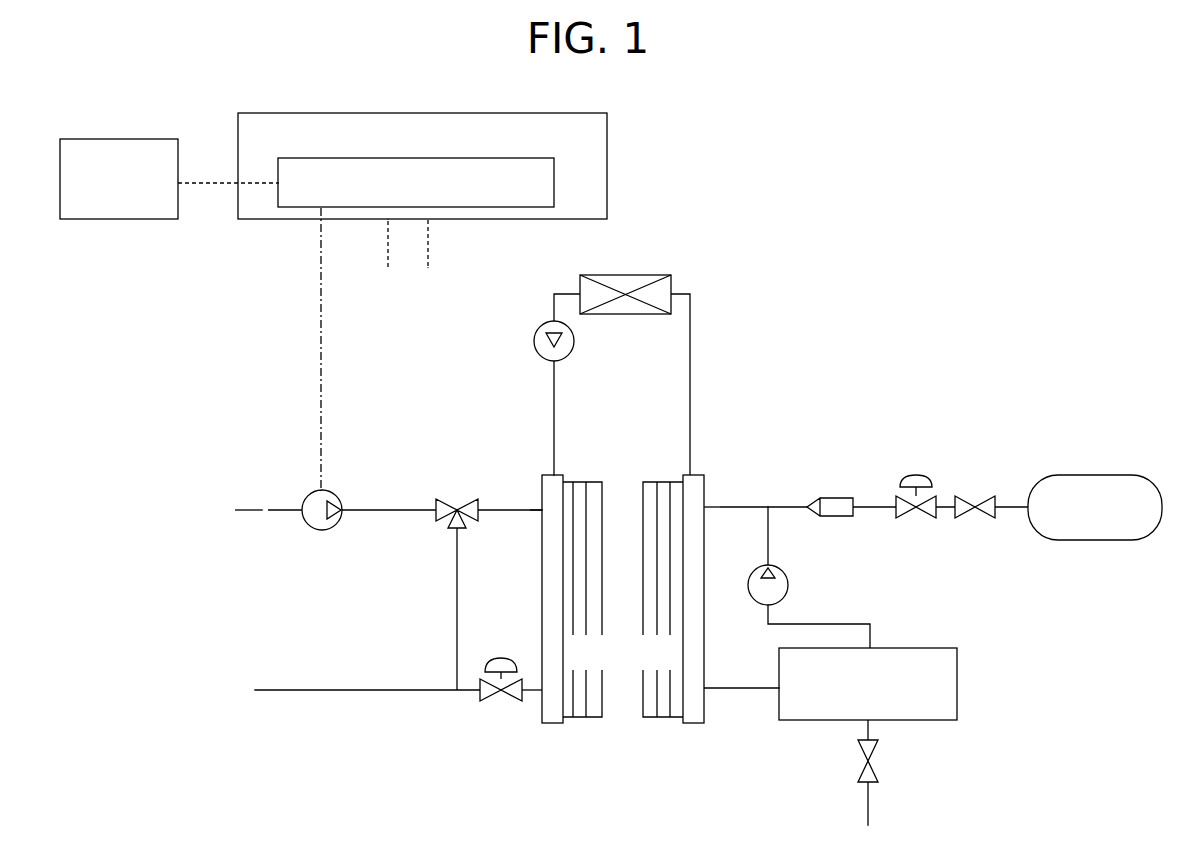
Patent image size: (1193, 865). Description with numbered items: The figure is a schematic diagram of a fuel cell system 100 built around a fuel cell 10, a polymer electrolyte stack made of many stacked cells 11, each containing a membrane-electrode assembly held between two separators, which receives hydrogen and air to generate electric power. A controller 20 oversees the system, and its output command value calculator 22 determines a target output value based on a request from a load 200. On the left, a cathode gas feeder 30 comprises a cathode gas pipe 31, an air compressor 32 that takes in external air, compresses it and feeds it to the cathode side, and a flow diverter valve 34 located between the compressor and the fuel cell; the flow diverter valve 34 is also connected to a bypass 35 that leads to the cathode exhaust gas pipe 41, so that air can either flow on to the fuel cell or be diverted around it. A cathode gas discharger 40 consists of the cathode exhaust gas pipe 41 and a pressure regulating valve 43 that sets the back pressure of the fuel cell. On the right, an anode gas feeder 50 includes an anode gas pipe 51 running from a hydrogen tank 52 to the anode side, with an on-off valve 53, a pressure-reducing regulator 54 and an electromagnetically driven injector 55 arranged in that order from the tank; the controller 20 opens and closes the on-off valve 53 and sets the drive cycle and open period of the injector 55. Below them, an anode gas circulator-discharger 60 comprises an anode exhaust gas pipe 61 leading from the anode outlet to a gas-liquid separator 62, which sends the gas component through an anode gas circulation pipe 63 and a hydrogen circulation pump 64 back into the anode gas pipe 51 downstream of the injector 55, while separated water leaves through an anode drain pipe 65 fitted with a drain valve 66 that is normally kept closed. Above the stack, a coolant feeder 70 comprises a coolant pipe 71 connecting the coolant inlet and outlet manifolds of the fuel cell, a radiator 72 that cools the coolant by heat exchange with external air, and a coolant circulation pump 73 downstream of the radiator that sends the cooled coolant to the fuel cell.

The fuel cell system 100 is at (997, 157).
The load 200 is at (147, 137).
The controller 20 is at (443, 166).
The output command value calculator 22 is at (554, 187).
The fuel cell 10 is at (609, 625).
The cells 11 is at (582, 726).
The cathode gas feeder 30 is at (313, 552).
The cathode gas pipe 31 is at (400, 505).
The air compressor 32 is at (330, 491).
The flow diverter valve 34 is at (448, 500).
The bypass 35 is at (457, 612).
The cathode gas discharger 40 is at (392, 695).
The cathode exhaust gas pipe 41 is at (296, 688).
The pressure regulating valve 43 is at (498, 658).
The anode gas feeder 50 is at (933, 467).
The anode gas pipe 51 is at (793, 505).
The hydrogen tank 52 is at (1080, 475).
The on-off valve 53 is at (962, 495).
The regulator 54 is at (913, 474).
The injector 55 is at (838, 518).
The anode gas circulator-discharger 60 is at (879, 666).
The anode exhaust gas pipe 61 is at (732, 695).
The gas-liquid separator 62 is at (920, 648).
The anode gas circulation pipe 63 is at (795, 623).
The hydrogen circulation pump 64 is at (780, 569).
The anode drain pipe 65 is at (875, 791).
The drain valve 66 is at (880, 766).
The coolant feeder 70 is at (629, 348).
The coolant pipe 71 is at (692, 325).
The radiator 72 is at (600, 275).
The coolant circulation pump 73 is at (535, 338).